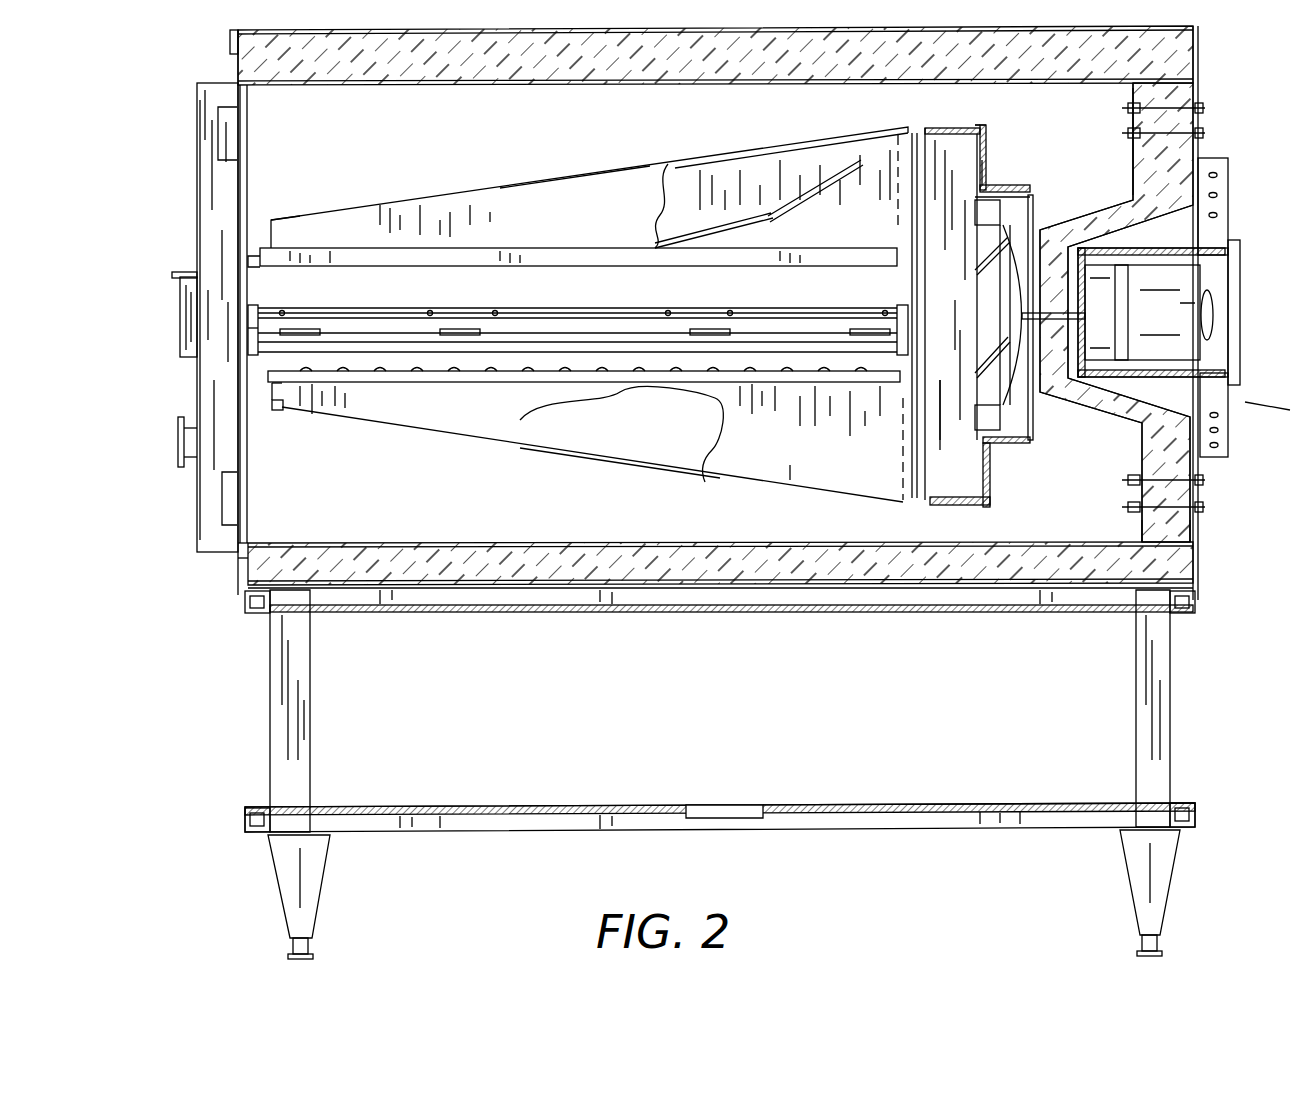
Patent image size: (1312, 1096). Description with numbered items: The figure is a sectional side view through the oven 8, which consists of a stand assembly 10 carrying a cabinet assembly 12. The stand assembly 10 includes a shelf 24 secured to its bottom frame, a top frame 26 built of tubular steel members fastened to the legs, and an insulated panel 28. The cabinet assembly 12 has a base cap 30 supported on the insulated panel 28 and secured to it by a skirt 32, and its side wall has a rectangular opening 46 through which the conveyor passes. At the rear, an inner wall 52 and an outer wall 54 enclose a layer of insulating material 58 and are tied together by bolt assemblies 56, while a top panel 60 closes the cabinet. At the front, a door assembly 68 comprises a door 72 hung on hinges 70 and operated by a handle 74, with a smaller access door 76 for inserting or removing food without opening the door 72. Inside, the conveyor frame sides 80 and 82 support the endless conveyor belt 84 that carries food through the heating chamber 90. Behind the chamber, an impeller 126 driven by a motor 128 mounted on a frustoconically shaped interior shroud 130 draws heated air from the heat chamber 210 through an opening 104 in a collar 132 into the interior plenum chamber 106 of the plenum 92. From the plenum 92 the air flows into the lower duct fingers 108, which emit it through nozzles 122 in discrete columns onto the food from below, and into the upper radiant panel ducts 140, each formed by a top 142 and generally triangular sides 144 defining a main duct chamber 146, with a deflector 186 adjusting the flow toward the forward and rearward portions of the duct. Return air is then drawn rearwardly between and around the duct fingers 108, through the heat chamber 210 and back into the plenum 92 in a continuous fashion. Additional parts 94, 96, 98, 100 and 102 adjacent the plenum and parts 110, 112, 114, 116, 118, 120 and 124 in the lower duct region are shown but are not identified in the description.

The oven 8 is at (1245, 402).
The stand assembly 10 is at (1188, 746).
The cabinet assembly 12 is at (150, 259).
The shelf 24 is at (535, 820).
The top frame 26 is at (1200, 600).
The insulated panel 28 is at (245, 578).
The base cap 30 is at (498, 543).
The skirt 32 is at (240, 557).
The rectangular opening 46 is at (248, 261).
The inner wall 52 is at (1140, 520).
The outer wall 54 is at (1200, 540).
The bolt assemblies 56 is at (1205, 108).
The insulating material 58 is at (1170, 100).
The top panel 60 is at (1090, 17).
The door assembly 68 is at (190, 152).
The hinges 70 is at (218, 135).
The door 72 is at (205, 190).
The handle 74 is at (178, 440).
The access door 76 is at (180, 290).
The frame side 80 is at (248, 330).
The frame side 82 is at (926, 320).
The endless conveyor belt 84 is at (343, 320).
The heating chamber 90 is at (454, 109).
The plenum 92 is at (985, 124).
The air openings 94 is at (898, 170).
The partition wall 96 is at (948, 128).
The bottom plate 98 is at (958, 505).
The lower bracket 100 is at (990, 470).
The top plate 102 is at (990, 145).
The opening 104 is at (1035, 197).
The plenum chamber 106 is at (959, 325).
The duct fingers 108 is at (720, 480).
The lower shelf 110 is at (382, 383).
The lower baffle 112 is at (450, 420).
The lower baffle surface 114 is at (798, 480).
The baffle support 116 is at (272, 392).
The fan chamber lower wall 118 is at (940, 420).
The lower plenum 120 is at (621, 434).
The nozzles 122 is at (622, 360).
The baffle bracket 124 is at (270, 410).
The impeller 126 is at (1015, 360).
The motor 128 is at (1180, 285).
The interior shroud 130 is at (1160, 220).
The collar 132 is at (995, 185).
The radiant panel ducts 140 is at (606, 170).
The top 142 is at (486, 190).
The triangular sides 144 is at (312, 222).
The main duct chamber 146 is at (841, 213).
The deflector 186 is at (810, 190).
The heat chamber 210 is at (1071, 506).